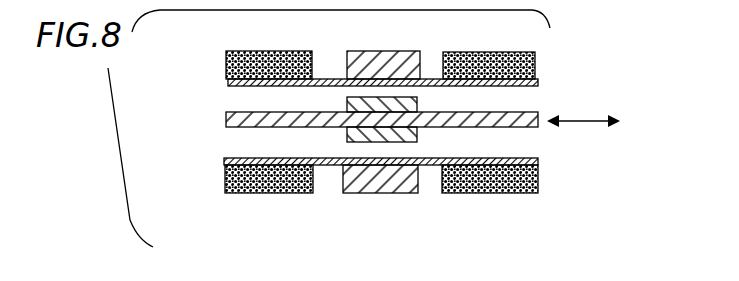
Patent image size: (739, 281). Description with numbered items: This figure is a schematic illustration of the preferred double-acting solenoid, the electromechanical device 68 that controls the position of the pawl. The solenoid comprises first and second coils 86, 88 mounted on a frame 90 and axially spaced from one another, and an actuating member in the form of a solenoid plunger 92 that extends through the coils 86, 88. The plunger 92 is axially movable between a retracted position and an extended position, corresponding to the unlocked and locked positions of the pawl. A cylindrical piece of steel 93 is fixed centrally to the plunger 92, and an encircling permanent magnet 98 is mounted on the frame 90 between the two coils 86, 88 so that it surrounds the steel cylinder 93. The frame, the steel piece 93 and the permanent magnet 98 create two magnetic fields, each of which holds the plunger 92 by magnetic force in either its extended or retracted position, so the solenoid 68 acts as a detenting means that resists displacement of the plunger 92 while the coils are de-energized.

The electromechanical device 68 is at (565, 64).
The first coil 86 is at (226, 52).
The second coil 88 is at (522, 52).
The frame 90 is at (232, 87).
The solenoid plunger 92 is at (533, 112).
The cylindrical piece of steel 93 is at (417, 103).
The permanent magnet 98 is at (352, 50).